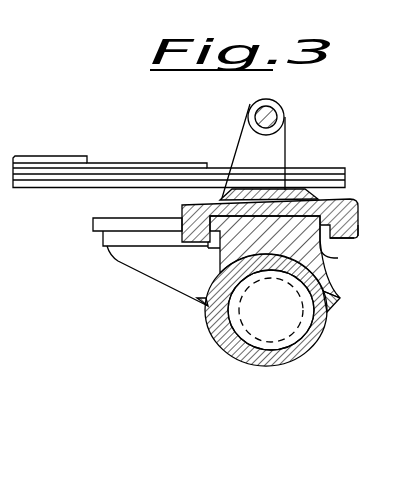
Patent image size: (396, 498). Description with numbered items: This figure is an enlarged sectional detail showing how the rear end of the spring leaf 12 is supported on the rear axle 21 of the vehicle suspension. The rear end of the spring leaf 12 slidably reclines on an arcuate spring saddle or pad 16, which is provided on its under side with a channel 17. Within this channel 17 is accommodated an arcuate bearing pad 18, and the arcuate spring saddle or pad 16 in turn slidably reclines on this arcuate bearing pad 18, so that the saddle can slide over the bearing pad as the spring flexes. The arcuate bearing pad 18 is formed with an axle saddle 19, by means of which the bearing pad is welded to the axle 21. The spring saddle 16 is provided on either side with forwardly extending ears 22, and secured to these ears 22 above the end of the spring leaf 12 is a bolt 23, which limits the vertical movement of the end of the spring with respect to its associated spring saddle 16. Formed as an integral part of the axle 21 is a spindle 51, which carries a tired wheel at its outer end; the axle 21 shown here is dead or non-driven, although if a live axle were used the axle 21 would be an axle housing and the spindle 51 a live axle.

The spring leaf 12 is at (133, 167).
The arcuate spring saddle or pad 16 is at (360, 203).
The channel 17 is at (351, 239).
The arcuate bearing pad 18 is at (340, 250).
The axle saddle 19 is at (341, 297).
The axle 21 is at (326, 333).
The forwardly extending ears 22 is at (282, 141).
The bolt 23 is at (283, 108).
The spindle 51 is at (219, 327).